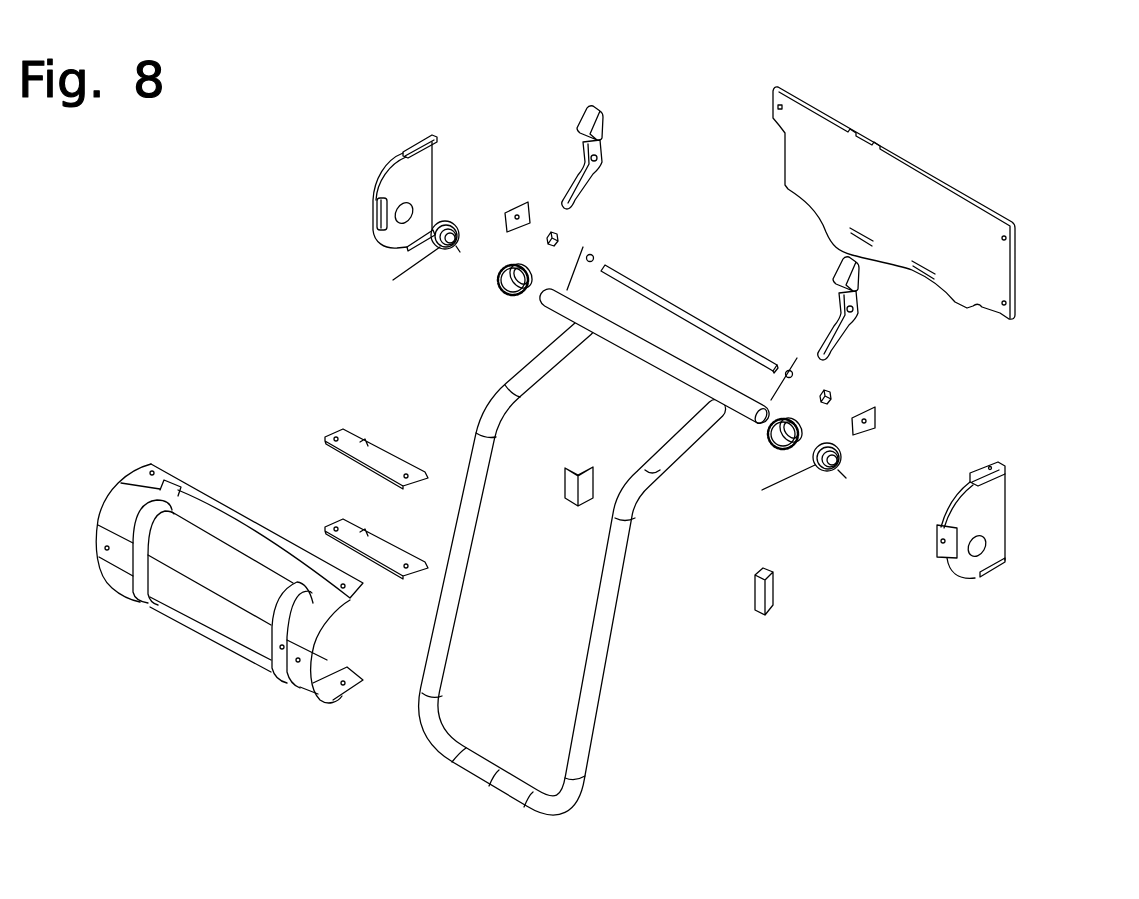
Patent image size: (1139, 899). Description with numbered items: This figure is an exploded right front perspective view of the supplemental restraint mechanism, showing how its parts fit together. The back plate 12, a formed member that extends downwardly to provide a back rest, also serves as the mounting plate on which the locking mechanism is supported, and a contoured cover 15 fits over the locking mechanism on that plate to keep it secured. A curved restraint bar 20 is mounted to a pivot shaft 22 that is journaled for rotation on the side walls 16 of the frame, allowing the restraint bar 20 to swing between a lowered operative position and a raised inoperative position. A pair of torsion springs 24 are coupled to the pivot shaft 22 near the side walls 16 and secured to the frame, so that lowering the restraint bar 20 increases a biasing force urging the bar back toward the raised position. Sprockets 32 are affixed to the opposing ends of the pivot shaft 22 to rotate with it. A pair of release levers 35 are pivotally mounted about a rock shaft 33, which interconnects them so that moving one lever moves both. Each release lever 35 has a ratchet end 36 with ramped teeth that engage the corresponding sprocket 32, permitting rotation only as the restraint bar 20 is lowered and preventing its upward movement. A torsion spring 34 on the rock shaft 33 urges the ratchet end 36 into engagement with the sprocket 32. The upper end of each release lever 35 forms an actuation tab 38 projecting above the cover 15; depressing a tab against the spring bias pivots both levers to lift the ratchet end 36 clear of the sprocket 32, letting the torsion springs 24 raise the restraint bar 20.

The back plate 12 is at (888, 190).
The cover 15 is at (205, 500).
The side walls 16 is at (397, 173).
The restraint bar 20 is at (594, 693).
The pivot shaft 22 is at (677, 380).
The torsion springs 24 is at (457, 230).
The sprockets 32 is at (505, 290).
The rock shaft 33 is at (678, 307).
The torsion spring 34 is at (594, 257).
The release levers 35 is at (857, 286).
The ratchet end 36 is at (567, 210).
The actuation tab 38 is at (598, 120).